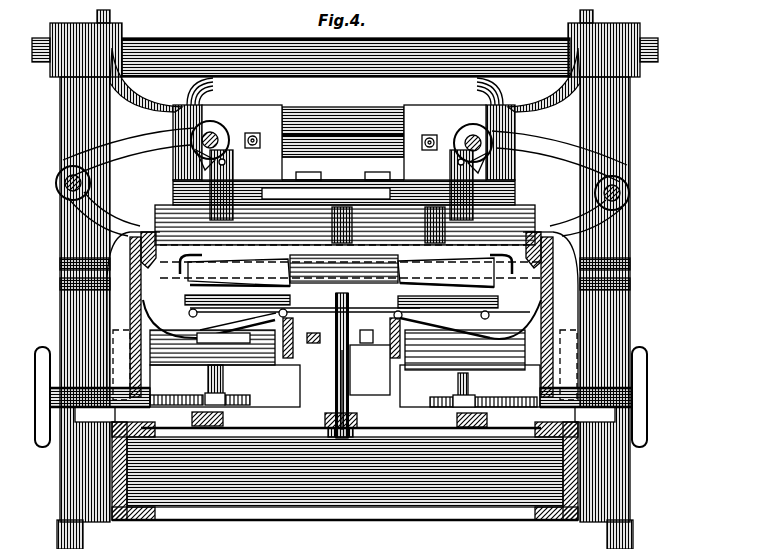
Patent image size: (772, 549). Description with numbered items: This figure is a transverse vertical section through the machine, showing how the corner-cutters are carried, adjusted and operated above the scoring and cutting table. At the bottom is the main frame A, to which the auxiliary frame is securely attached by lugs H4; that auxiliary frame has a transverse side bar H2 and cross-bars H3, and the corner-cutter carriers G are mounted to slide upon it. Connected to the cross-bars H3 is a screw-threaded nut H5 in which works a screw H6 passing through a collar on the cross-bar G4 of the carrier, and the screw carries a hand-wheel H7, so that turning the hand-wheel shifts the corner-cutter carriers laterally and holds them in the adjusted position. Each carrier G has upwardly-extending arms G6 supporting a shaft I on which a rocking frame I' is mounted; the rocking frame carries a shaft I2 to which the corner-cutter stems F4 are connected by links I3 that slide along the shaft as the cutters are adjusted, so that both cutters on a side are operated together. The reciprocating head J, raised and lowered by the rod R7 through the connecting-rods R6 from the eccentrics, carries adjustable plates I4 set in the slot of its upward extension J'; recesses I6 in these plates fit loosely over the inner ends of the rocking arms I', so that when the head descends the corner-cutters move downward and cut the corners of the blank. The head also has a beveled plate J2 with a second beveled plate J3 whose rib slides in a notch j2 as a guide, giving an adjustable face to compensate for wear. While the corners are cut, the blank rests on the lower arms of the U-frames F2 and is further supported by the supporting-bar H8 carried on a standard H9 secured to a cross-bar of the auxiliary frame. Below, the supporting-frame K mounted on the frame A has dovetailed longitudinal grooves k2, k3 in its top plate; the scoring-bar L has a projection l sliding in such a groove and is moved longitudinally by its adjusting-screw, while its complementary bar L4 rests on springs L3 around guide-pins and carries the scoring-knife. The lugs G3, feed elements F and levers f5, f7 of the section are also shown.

The rod R7 is at (448, 42).
The connecting-rods R6 is at (62, 131).
The rocking frame I' is at (345, 149).
The adjustable plates I4 is at (248, 111).
The links I3 is at (230, 148).
The shaft I2 is at (196, 150).
The recesses I6 is at (450, 150).
The corner-cutter stems F4 is at (236, 172).
The upward extension J' is at (343, 120).
The beveled plate J2 is at (304, 190).
The reciprocating head J is at (343, 169).
The notch j2 is at (380, 192).
The second beveled plate J3 is at (315, 197).
The shaft I is at (340, 193).
The upwardly-extending arms G6 is at (113, 212).
The lug G3 is at (157, 250).
The feed bar F is at (341, 272).
The U-frames F2 is at (347, 277).
The springs L3 is at (317, 260).
The complementary bar L4 is at (388, 263).
The supporting-bar H8 is at (338, 323).
The cam f7 is at (342, 319).
The lever f5 is at (228, 336).
The corner-cutter carrier G is at (342, 316).
The cross-bar G4 is at (128, 343).
The longitudinal groove k3 is at (228, 343).
The longitudinal groove k2 is at (315, 343).
The scoring-bar L is at (360, 325).
The projection l is at (432, 340).
The screw H6 is at (182, 395).
The screw-threaded nut H5 is at (226, 396).
The standard H9 is at (336, 378).
The supporting-frame K is at (370, 370).
The hand-wheel H7 is at (35, 420).
The cross-bars H3 is at (224, 420).
The side bar H2 is at (341, 421).
The lugs H4 is at (113, 428).
The frame A is at (113, 482).